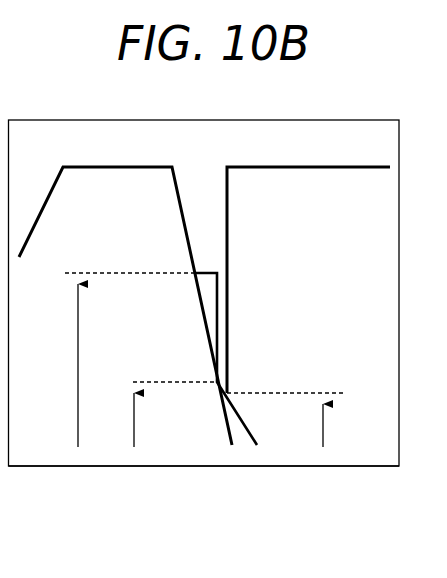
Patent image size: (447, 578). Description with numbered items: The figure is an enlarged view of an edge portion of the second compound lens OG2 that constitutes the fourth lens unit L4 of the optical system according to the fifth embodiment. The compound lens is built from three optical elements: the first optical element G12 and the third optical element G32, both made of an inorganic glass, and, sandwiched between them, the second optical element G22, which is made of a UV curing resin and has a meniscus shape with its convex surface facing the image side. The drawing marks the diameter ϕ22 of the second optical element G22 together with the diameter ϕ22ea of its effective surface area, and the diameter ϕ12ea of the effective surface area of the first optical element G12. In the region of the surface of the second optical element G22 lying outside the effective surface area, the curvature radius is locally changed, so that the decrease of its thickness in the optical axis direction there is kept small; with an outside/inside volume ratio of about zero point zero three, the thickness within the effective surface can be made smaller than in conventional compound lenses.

The third optical element G32 is at (120, 177).
The second optical element G22 is at (205, 283).
The first optical element G12 is at (305, 176).
The diameter of the second optical element 22 is at (130, 348).
The diameter of the effective surface area of the second optical element 22ea is at (172, 402).
The diameter of the effective surface area of the first optical element 12ea is at (290, 407).
The fourth lens unit L4 is at (202, 466).